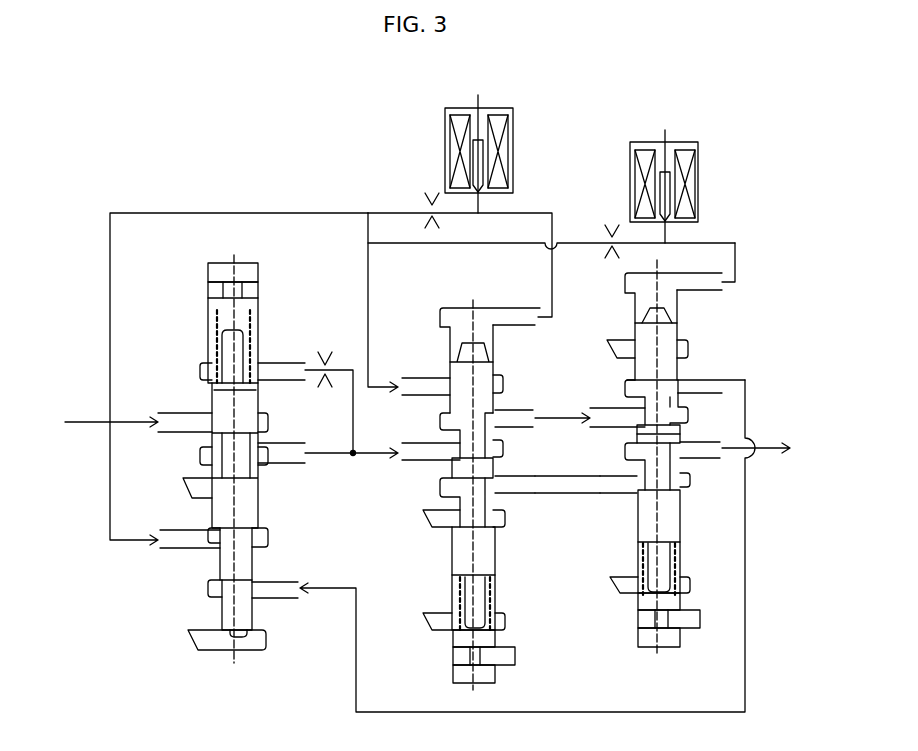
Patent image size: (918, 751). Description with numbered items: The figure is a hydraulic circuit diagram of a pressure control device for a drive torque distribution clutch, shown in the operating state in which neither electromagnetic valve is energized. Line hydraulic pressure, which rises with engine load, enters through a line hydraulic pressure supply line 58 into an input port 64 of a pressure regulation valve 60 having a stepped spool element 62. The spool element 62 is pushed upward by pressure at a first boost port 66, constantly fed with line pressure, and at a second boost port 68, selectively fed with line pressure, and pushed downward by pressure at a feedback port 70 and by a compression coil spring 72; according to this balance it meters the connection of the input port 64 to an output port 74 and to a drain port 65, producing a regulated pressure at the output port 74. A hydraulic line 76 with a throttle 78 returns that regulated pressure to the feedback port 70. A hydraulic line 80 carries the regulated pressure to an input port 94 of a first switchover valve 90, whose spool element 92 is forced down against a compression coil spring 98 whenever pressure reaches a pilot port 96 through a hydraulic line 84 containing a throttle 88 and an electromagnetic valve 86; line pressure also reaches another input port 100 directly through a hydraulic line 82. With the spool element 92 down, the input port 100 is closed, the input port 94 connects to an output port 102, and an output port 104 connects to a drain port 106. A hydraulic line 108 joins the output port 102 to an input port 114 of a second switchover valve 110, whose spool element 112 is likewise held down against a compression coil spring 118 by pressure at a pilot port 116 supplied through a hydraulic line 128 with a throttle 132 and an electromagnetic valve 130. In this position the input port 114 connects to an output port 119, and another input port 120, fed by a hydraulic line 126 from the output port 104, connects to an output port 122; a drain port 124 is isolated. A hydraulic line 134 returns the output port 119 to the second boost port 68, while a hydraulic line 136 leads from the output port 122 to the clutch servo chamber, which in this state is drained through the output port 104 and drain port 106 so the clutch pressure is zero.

The line hydraulic pressure supply line 58 is at (82, 422).
The pressure regulation valve 60 is at (252, 266).
The stepped spool element 62 is at (248, 400).
The input port 64 is at (200, 423).
The drain port 65 is at (193, 480).
The first boost port 66 is at (180, 547).
The second boost port 68 is at (267, 587).
The feedback port 70 is at (288, 368).
The compression coil spring 72 is at (254, 320).
The output port 74 is at (282, 430).
The hydraulic line 76 is at (353, 408).
The throttle 78 is at (332, 356).
The hydraulic line 80 is at (337, 453).
The hydraulic line 82 is at (368, 288).
The hydraulic line 84 is at (552, 210).
The electromagnetic valve 86 is at (512, 143).
The throttle 88 is at (440, 222).
The first switchover valve 90 is at (493, 360).
The spool element 92 is at (497, 558).
The input port 94 is at (413, 453).
The pilot port 96 is at (503, 308).
The compression coil spring 98 is at (498, 598).
The input port 100 is at (420, 386).
The output port 102 is at (505, 418).
The output port 104 is at (510, 485).
The drain port 106 is at (443, 527).
The hydraulic line 108 is at (563, 417).
The second switchover valve 110 is at (680, 313).
The spool element 112 is at (668, 335).
The input port 114 is at (622, 425).
The pilot port 116 is at (698, 282).
The compression coil spring 118 is at (683, 560).
The output port 119 is at (702, 385).
The input port 120 is at (625, 493).
The output port 122 is at (695, 445).
The drain port 124 is at (620, 340).
The hydraulic line 126 is at (563, 493).
The hydraulic line 128 is at (735, 240).
The electromagnetic valve 130 is at (698, 177).
The throttle 132 is at (591, 246).
The hydraulic line 134 is at (748, 583).
The hydraulic line 136 is at (772, 448).